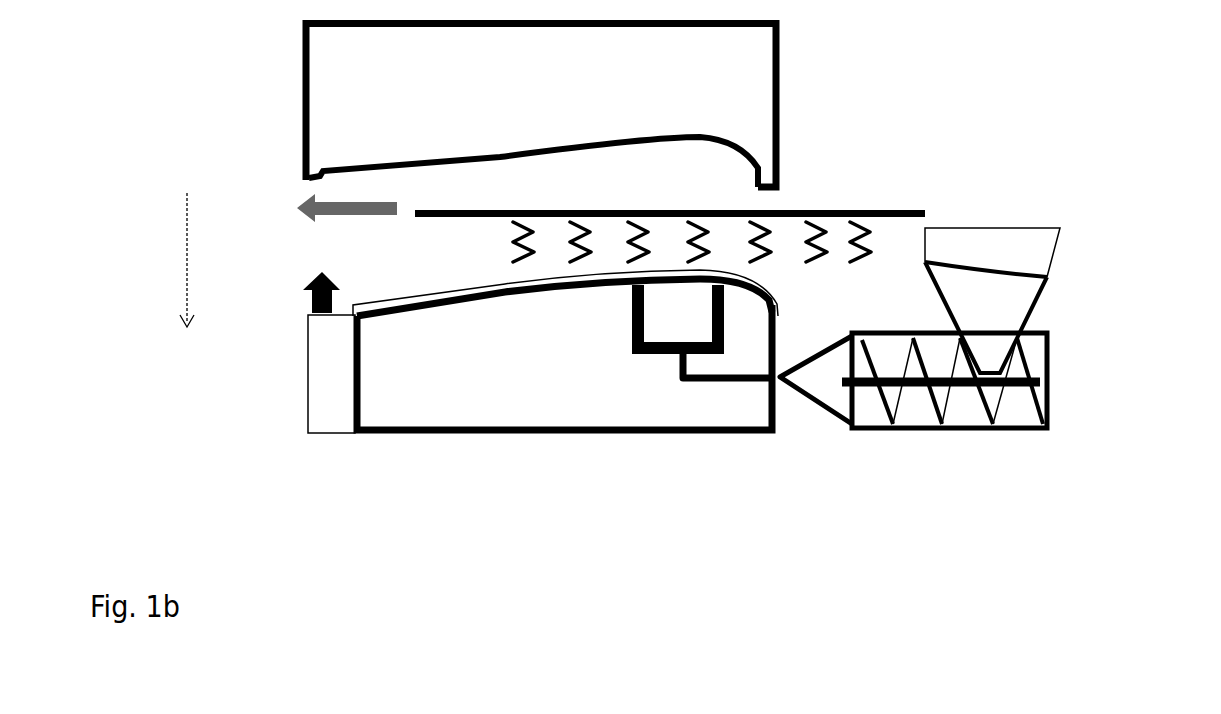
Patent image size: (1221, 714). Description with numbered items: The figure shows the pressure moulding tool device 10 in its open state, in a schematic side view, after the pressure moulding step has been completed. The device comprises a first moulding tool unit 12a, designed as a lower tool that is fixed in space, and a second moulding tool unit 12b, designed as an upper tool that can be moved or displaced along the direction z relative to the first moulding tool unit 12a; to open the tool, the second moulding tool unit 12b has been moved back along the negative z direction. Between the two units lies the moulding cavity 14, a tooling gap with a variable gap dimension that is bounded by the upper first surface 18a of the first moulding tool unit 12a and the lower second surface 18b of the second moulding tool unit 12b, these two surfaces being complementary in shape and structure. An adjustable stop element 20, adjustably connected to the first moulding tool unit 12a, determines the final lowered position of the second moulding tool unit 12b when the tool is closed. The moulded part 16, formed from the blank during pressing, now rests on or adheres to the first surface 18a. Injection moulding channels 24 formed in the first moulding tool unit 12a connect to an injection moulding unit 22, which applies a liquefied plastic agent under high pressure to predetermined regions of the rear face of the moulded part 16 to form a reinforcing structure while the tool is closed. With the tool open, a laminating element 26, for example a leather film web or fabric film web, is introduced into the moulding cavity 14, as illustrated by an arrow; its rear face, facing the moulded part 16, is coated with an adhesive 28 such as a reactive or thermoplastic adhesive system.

The pressure moulding tool device 10 is at (243, 113).
The first moulding tool unit 12a is at (533, 392).
The second moulding tool unit 12b is at (343, 72).
The moulding cavity 14 is at (557, 194).
The moulded part 16 is at (383, 296).
The first surface 18a is at (422, 312).
The second surface 18b is at (712, 140).
The adjustable stop element 20 is at (323, 365).
The injection moulding unit 22 is at (1075, 298).
The injection moulding channels 24 is at (740, 383).
The laminating element 26 is at (882, 210).
The adhesive 28 is at (800, 268).